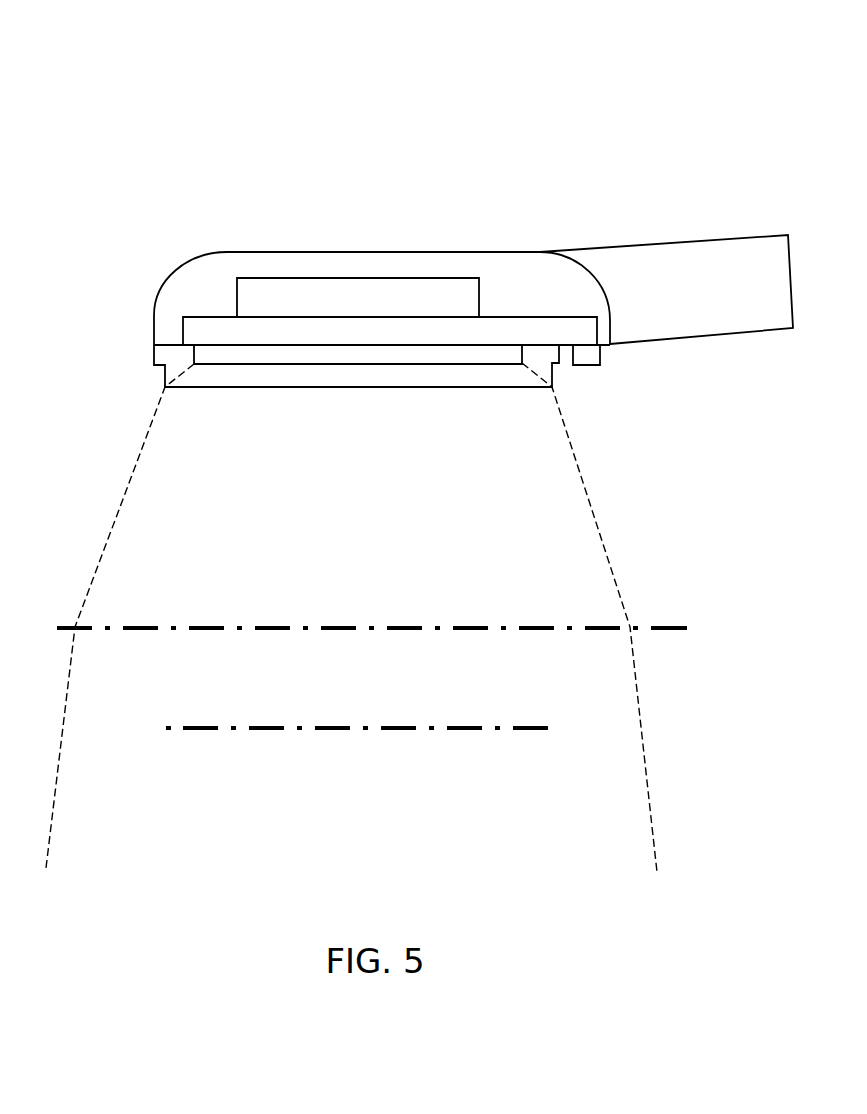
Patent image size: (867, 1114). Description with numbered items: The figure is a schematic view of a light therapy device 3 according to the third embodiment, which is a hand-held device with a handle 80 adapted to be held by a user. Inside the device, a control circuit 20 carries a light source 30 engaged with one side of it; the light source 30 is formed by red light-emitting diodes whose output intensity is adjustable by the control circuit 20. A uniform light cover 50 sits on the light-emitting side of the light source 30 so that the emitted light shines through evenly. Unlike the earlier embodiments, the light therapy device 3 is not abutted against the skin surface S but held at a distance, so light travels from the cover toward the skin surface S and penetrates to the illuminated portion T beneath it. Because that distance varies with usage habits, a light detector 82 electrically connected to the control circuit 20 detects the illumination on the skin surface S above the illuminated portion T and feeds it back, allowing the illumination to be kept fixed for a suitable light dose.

The light therapy device 3 is at (524, 112).
The control circuit 20 is at (193, 333).
The light source 30 is at (210, 351).
The uniform light cover 50 is at (165, 378).
The handle 80 is at (668, 278).
The light detector 82 is at (587, 355).
The skin surface S is at (673, 628).
The illuminated portion T is at (537, 728).